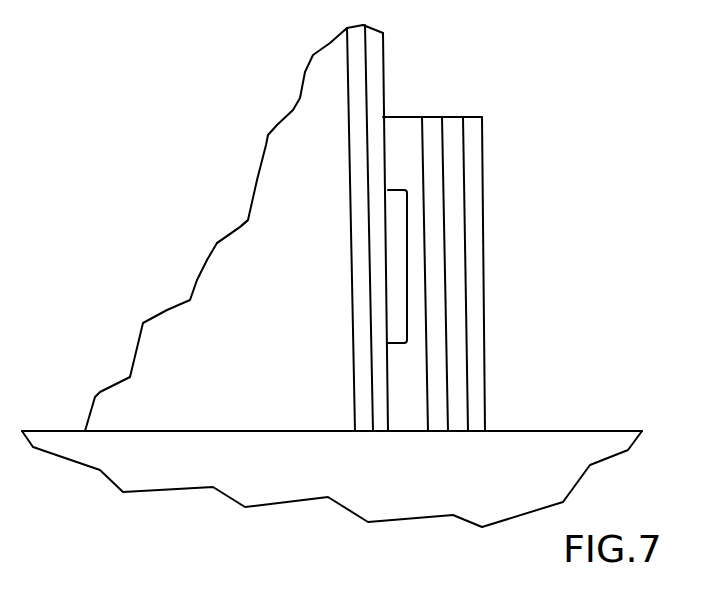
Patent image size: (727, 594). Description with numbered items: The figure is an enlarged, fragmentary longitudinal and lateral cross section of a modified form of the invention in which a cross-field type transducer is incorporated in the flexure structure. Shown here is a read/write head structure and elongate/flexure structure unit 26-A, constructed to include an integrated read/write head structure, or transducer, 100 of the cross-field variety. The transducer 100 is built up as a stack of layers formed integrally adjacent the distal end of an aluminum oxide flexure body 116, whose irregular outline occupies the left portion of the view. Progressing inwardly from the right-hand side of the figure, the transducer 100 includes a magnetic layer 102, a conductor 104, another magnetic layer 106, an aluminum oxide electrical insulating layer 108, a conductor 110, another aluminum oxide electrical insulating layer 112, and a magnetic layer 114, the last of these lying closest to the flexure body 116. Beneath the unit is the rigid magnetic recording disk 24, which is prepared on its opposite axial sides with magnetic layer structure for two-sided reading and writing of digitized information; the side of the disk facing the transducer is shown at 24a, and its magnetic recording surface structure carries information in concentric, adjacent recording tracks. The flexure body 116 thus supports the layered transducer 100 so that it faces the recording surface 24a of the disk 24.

The read/write head structure and elongate/flexure structure unit 26-A is at (257, 124).
The aluminum oxide flexure body 116 is at (243, 258).
The integrated read/write head structure 100 is at (422, 228).
The magnetic layer 102 is at (473, 212).
The conductor 104 is at (455, 262).
The magnetic layer 106 is at (435, 170).
The aluminum oxide electrical insulating layer 108 is at (412, 392).
The conductor 110 is at (395, 230).
The aluminum oxide electrical insulating layer 112 is at (375, 272).
The magnetic layer 114 is at (362, 318).
The rigid magnetic recording disk 24 is at (583, 454).
The side of disk 24a is at (563, 431).